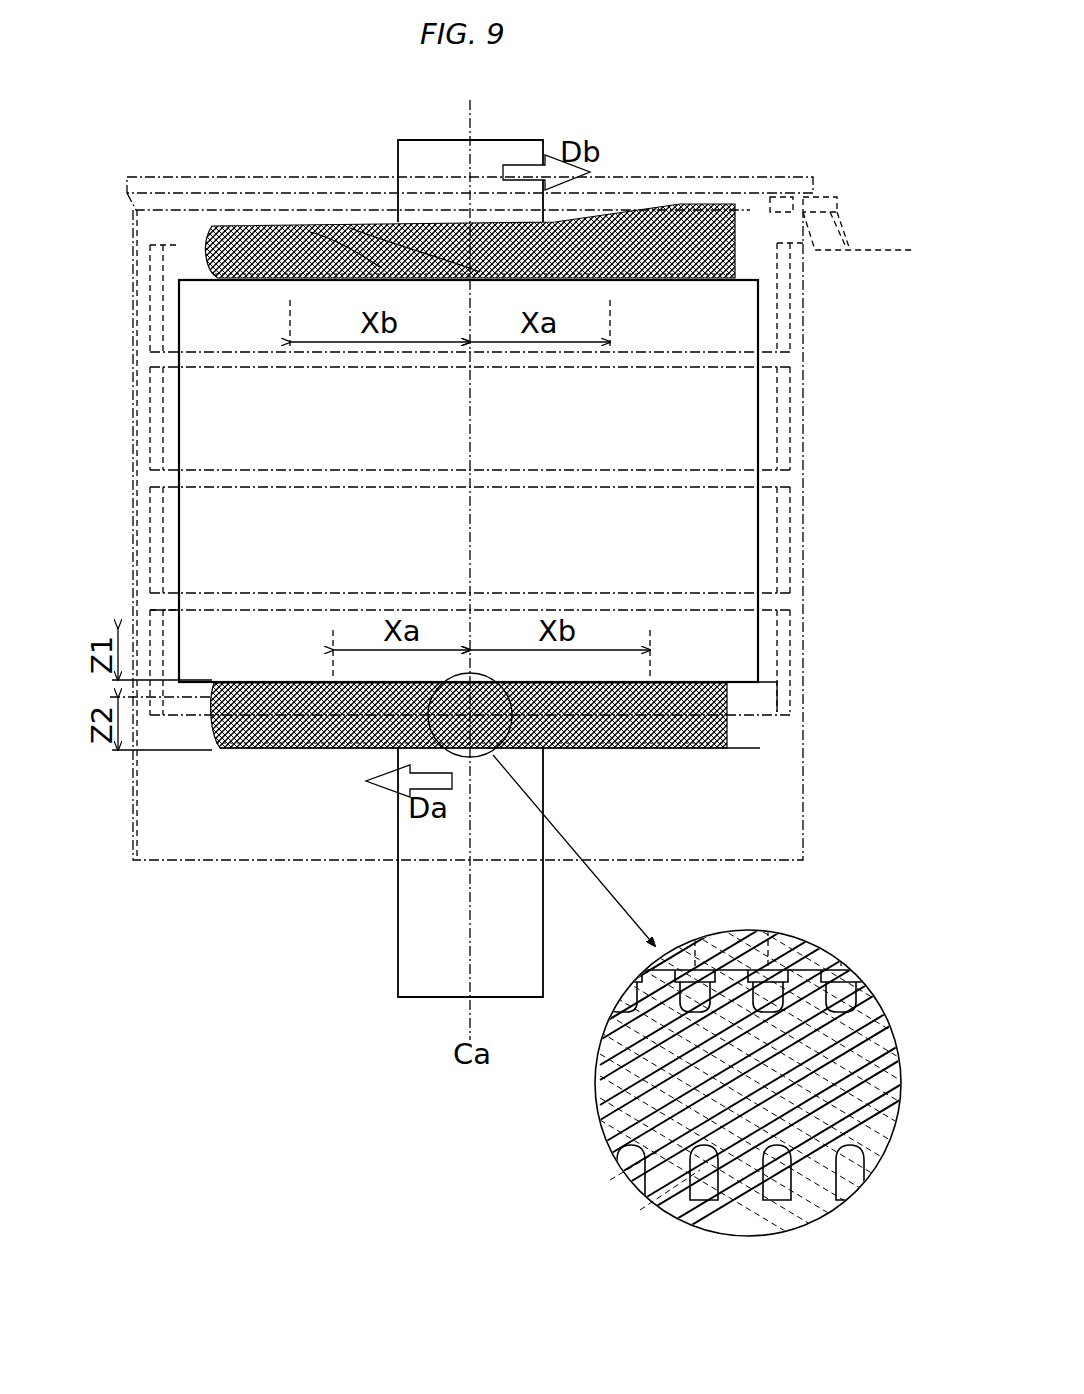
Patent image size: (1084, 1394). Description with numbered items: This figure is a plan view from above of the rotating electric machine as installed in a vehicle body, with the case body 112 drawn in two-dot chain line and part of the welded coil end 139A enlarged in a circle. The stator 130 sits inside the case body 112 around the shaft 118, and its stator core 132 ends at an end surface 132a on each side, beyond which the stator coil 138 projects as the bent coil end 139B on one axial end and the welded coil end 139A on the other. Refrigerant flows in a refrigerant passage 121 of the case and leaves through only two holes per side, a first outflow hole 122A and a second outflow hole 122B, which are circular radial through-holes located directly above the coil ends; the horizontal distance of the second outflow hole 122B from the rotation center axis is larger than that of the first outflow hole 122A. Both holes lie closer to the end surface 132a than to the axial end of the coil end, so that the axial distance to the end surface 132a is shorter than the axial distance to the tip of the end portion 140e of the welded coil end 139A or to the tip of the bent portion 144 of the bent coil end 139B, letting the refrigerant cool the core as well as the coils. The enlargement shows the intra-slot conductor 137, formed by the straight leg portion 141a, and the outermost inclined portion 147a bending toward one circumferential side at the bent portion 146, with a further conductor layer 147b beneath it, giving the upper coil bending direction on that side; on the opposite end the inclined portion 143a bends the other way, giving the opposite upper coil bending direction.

The case body 112 is at (235, 858).
The shaft 118 is at (428, 982).
The refrigerant passage 121 is at (192, 245).
The first outflow hole 122A is at (632, 278).
The second outflow hole 122B is at (272, 278).
The stator 130 is at (762, 440).
The stator core 132 is at (762, 566).
The end surface of the stator core 132a is at (752, 686).
The intra-slot conductor 137 is at (790, 965).
The stator coil 138 is at (730, 726).
The welded coil end 139A is at (268, 755).
The bent coil end 139B is at (290, 215).
The end portion 140e is at (625, 748).
The leg portion 141a is at (777, 1172).
The inclined portion 143a is at (370, 250).
The bent portion 144 is at (330, 240).
The bent portion 146 is at (772, 1000).
The inclined portion 147a is at (650, 1122).
The second wire layer 147b is at (668, 1162).